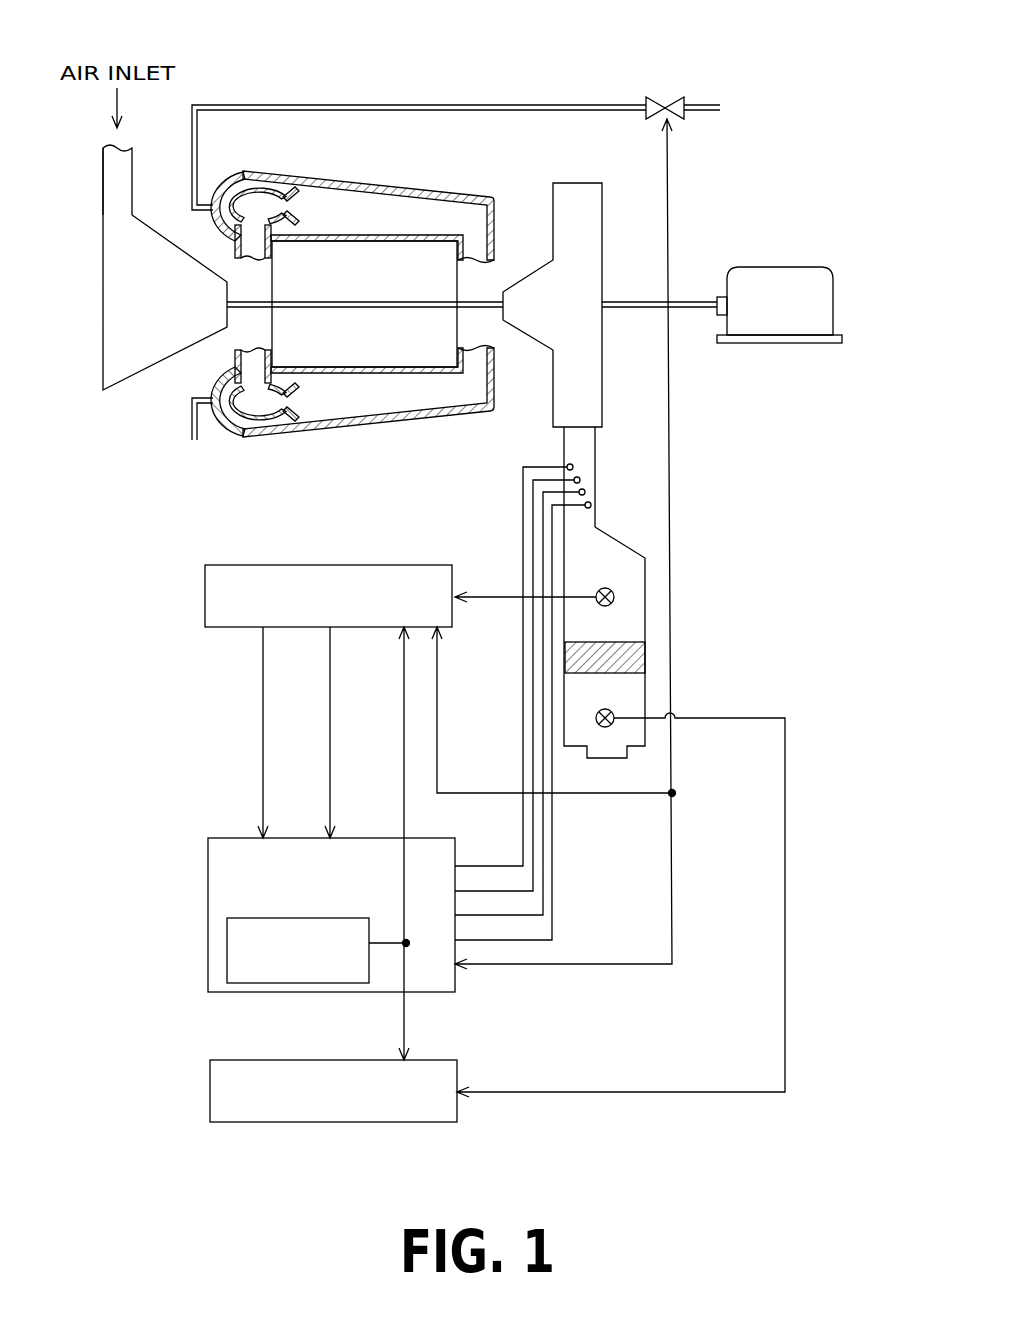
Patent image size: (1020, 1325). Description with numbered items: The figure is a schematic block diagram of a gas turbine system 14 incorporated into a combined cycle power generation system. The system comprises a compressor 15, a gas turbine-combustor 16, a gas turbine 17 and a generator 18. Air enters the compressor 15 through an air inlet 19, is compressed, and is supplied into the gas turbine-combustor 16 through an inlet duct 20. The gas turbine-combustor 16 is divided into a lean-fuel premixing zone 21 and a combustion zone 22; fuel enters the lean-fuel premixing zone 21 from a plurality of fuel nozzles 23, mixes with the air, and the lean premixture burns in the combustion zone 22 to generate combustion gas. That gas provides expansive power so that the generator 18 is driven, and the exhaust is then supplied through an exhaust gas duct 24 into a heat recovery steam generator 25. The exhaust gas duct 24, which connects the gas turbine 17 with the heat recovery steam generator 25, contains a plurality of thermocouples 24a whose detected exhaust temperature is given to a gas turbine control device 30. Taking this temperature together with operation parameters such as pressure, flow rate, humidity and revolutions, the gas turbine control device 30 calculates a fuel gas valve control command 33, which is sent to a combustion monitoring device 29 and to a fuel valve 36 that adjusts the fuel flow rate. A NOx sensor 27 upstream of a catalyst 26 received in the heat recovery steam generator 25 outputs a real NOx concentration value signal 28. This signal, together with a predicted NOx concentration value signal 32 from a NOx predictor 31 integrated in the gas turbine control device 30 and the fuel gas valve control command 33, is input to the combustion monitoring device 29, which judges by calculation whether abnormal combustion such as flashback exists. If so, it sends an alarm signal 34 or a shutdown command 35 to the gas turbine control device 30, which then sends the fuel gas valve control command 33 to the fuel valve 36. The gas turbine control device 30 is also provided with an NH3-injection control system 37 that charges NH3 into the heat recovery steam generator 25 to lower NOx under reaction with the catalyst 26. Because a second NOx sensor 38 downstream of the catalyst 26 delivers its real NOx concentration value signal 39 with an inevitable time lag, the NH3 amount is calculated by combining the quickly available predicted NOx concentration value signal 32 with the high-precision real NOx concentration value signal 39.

The gas turbine system 14 is at (388, 79).
The compressor 15 is at (103, 302).
The gas turbine-combustor 16 is at (450, 190).
The gas turbine 17 is at (575, 183).
The generator 18 is at (779, 267).
The air inlet 19 is at (102, 190).
The inlet duct 20 is at (235, 249).
The lean-fuel premixing zone 21 is at (259, 207).
The combustion zone 22 is at (334, 212).
The fuel nozzle 23 is at (222, 187).
The exhaust gas duct 24 is at (597, 449).
The thermocouples 24a is at (591, 504).
The heat recovery steam generator 25 is at (647, 607).
The catalyst 26 is at (647, 653).
The NOx sensor 27 is at (614, 591).
The real NOx concentration value signal 28 is at (487, 592).
The combustion monitoring device 29 is at (205, 594).
The gas turbine control device 30 is at (208, 872).
The NOx predictor 31 is at (227, 950).
The predicted NOx concentration value signal 32 is at (388, 945).
The fuel gas valve control command 33 is at (562, 965).
The alarm signal 34 is at (263, 722).
The shutdown command 35 is at (330, 722).
The fuel valve 36 is at (665, 97).
The NH3-injection control system 37 is at (210, 1094).
The NOx sensor 38 is at (613, 712).
The real NOx concentration value signal 39 is at (562, 1093).